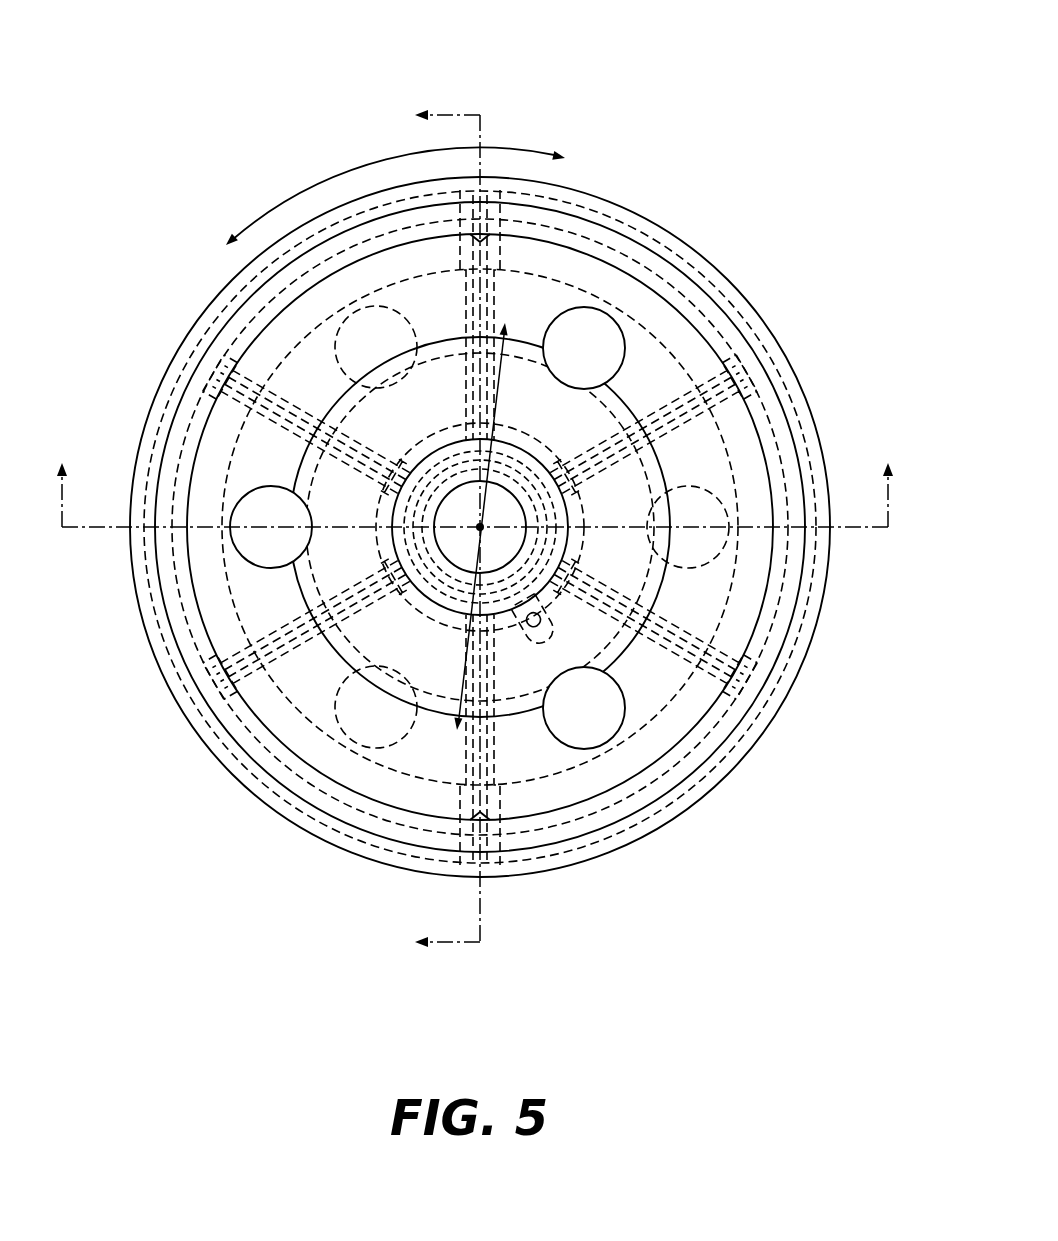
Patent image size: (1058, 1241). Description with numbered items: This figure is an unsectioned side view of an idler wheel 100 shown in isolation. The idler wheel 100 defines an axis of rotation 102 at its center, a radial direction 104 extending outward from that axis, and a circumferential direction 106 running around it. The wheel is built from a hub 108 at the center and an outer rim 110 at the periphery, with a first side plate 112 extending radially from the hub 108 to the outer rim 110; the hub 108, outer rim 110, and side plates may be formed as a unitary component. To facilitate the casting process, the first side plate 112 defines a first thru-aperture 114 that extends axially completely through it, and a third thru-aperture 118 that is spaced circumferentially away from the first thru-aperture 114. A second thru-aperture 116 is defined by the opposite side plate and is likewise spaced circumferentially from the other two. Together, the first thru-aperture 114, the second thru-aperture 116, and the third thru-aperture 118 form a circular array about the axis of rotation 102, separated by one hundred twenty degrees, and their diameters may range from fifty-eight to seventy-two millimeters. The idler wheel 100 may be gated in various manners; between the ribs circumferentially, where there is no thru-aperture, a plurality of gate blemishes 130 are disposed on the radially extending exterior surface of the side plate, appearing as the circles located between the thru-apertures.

The idler wheel 100 is at (657, 63).
The axis of rotation 102 is at (488, 538).
The radial direction 104 is at (481, 717).
The circumferential direction 106 is at (320, 184).
The hub 108 is at (568, 512).
The outer rim 110 is at (722, 266).
The first side plate 112 is at (263, 455).
The first thru-aperture 114 is at (625, 355).
The second thru-aperture 116 is at (602, 723).
The third thru-aperture 118 is at (270, 553).
The gate blemishes 130 is at (335, 343).